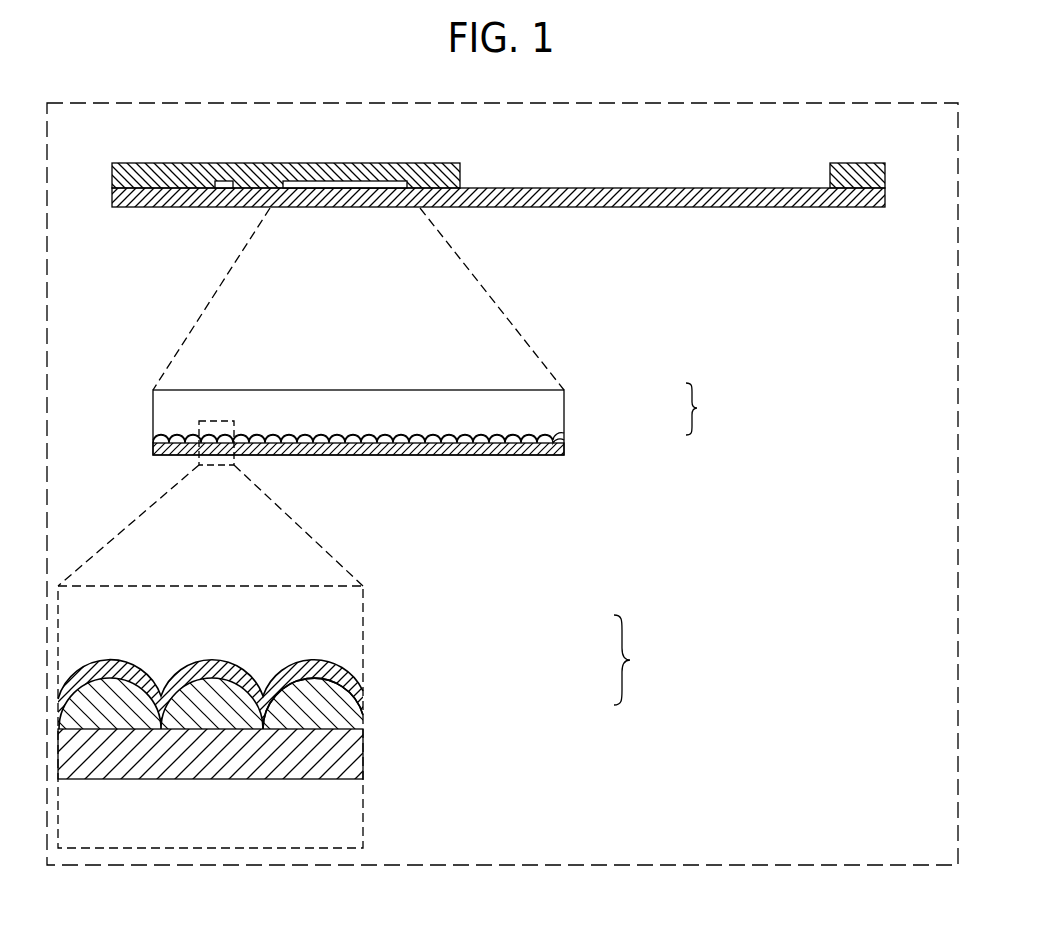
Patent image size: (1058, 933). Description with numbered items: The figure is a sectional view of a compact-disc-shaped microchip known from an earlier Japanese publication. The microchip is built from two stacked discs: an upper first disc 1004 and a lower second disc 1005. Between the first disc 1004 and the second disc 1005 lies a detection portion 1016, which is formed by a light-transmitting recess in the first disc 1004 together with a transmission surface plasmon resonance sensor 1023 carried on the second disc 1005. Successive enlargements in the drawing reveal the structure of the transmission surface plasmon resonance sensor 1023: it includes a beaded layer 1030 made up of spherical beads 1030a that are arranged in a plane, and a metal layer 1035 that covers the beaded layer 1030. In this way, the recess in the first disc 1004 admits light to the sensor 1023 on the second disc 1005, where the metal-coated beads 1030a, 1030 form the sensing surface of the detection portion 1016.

The detection portion 1016 is at (347, 180).
The first disc 1004 is at (840, 165).
The second disc 1005 is at (840, 208).
The transmission surface plasmon resonance sensor 1023 is at (692, 544).
The metal layer 1035 is at (490, 434).
The beaded layer 1030 is at (528, 434).
The spherical beads 1030a is at (313, 703).